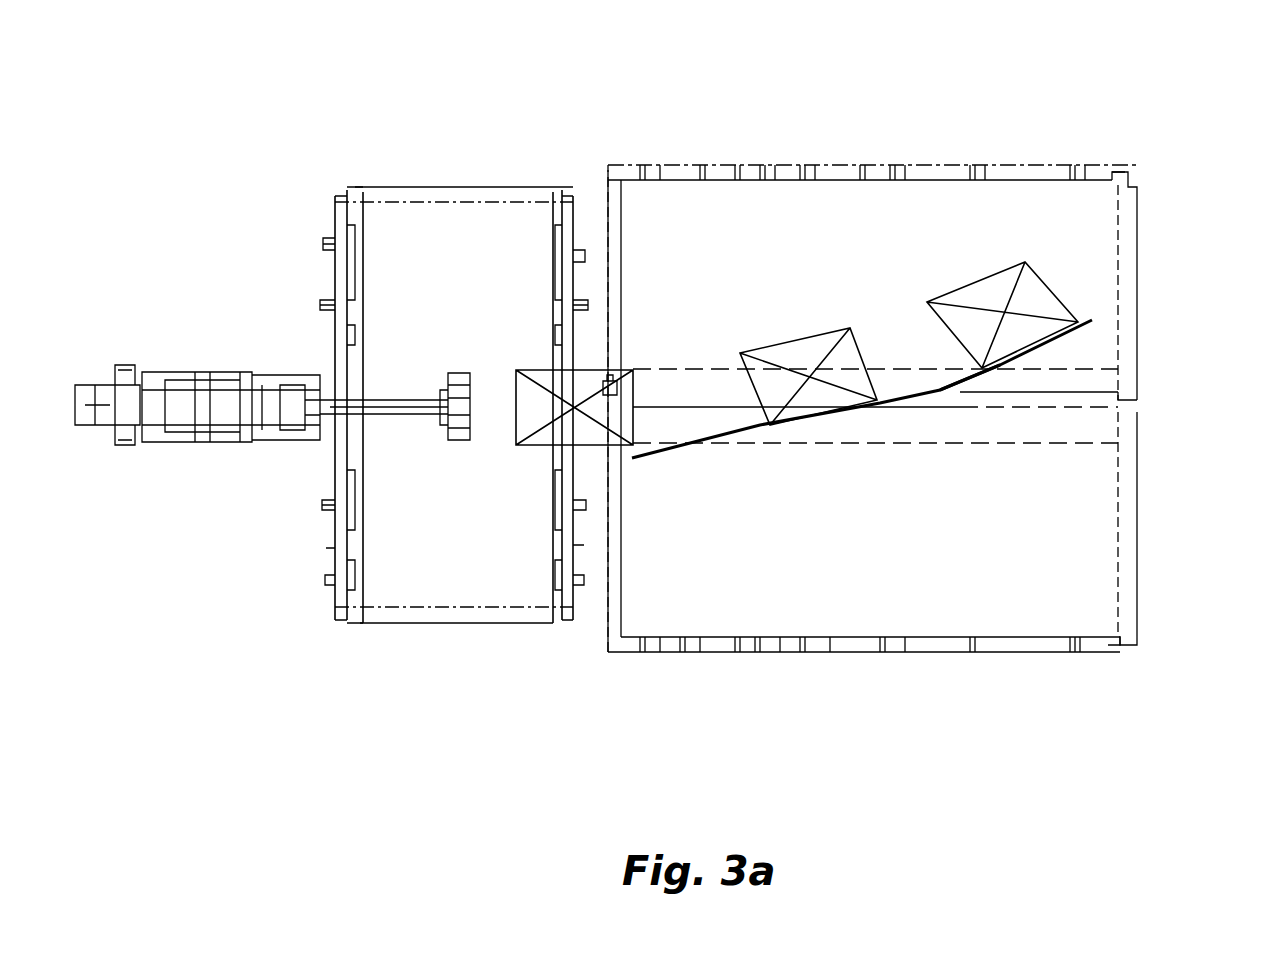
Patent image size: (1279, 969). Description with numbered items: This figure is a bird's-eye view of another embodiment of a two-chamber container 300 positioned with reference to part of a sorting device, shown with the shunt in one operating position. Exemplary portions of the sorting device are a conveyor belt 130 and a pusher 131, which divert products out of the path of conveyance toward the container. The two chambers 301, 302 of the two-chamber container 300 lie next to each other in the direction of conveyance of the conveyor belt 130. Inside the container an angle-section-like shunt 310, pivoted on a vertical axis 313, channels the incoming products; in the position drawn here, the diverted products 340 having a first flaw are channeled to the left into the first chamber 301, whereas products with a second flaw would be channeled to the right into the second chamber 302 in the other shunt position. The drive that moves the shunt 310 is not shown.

The conveyor belt 130 is at (463, 258).
The pusher 131 is at (458, 443).
The two-chamber container 300 is at (1057, 152).
The first chamber 301 is at (869, 286).
The second chamber 302 is at (869, 524).
The shunt 310 is at (853, 422).
The vertical axis 313 is at (960, 387).
The diverted products 340 is at (950, 290).